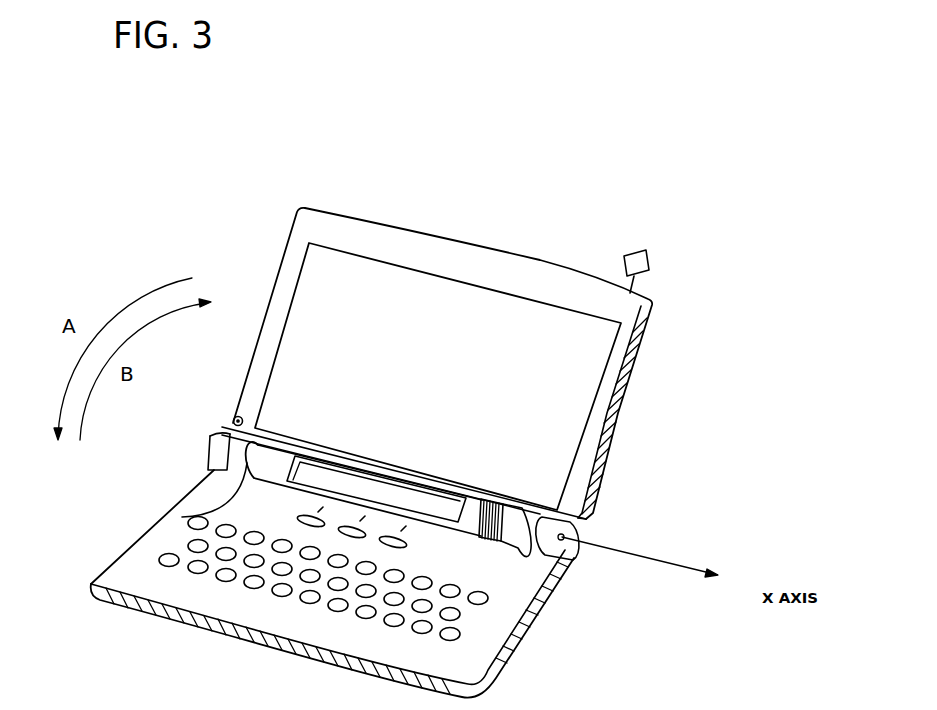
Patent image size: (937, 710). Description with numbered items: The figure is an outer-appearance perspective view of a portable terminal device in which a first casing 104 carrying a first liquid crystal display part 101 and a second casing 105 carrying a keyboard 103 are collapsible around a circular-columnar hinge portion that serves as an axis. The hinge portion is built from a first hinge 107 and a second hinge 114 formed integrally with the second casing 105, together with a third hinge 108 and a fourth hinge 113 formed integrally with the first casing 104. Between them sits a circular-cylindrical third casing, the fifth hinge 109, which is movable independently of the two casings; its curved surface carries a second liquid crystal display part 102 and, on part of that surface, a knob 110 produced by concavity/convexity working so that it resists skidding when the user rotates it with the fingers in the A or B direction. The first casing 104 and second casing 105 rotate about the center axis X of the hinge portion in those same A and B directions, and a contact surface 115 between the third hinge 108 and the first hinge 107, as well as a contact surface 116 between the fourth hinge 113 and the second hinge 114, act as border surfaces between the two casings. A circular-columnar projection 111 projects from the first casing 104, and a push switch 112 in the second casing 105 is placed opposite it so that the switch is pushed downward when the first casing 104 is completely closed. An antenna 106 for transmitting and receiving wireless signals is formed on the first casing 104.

The first liquid crystal display part 101 is at (572, 373).
The second liquid crystal display part 102 is at (312, 462).
The keyboard 103 is at (158, 560).
The first casing 104 is at (633, 317).
The second casing 105 is at (453, 655).
The antenna 106 is at (638, 252).
The first hinge 107 is at (528, 540).
The third hinge 108 is at (562, 537).
The fifth hinge 109 is at (280, 457).
The knob 110 is at (497, 500).
The projection 111 is at (234, 417).
The push switch 112 is at (214, 486).
The fourth hinge 113 is at (214, 445).
The second hinge 114 is at (182, 517).
The contact surface 115 is at (578, 516).
The contact surface 116 is at (266, 432).